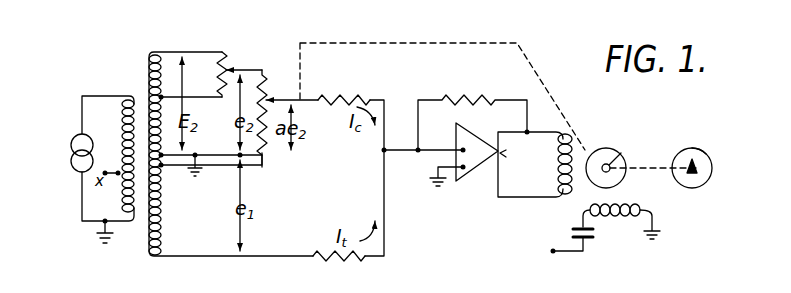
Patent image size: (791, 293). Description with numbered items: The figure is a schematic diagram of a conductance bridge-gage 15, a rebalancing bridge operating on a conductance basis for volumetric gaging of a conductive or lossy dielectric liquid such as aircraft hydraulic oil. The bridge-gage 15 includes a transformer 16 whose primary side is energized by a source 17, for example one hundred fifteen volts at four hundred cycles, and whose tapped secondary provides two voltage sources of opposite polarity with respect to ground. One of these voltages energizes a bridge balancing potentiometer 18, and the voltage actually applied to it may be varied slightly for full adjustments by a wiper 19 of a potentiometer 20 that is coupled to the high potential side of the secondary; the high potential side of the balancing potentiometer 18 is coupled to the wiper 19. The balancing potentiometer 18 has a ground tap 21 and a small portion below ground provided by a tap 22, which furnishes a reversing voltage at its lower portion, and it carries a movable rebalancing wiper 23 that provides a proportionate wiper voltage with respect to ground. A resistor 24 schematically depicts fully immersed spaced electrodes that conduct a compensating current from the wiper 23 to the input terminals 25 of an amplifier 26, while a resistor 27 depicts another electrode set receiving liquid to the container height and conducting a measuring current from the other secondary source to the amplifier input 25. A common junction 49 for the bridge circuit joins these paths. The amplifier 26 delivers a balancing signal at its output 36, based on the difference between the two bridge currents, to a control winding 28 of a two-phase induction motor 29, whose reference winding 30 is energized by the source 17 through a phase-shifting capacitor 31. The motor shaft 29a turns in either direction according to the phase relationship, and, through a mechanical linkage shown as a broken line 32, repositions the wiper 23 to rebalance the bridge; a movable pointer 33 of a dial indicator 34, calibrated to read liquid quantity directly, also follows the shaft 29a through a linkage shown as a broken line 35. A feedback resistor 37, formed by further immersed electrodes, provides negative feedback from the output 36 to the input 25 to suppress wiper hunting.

The conductance bridge-gage 15 is at (413, 29).
The transformer 16 is at (141, 214).
The source 17 is at (71, 162).
The bridge balancing potentiometer 18 is at (266, 78).
The wiper 19 is at (256, 70).
The potentiometer 20 is at (219, 63).
The ground tap 21 is at (265, 158).
The tap 22 is at (166, 172).
The movable rebalancing wiper 23 is at (272, 100).
The resistor 24 is at (352, 99).
The input terminals 25 is at (437, 158).
The amplifier 26 is at (476, 169).
The resistor 27 is at (354, 259).
The control winding 28 is at (560, 196).
The two-phase induction motor 29 is at (622, 142).
The motor shaft 29a is at (620, 156).
The reference winding 30 is at (633, 226).
The phase-shifting capacitor 31 is at (594, 240).
The broken line 32 is at (505, 42).
The movable pointer 33 is at (700, 170).
The dial indicator 34 is at (706, 154).
The broken line 35 is at (664, 172).
The amplifier output 36 is at (504, 153).
The feedback resistor 37 is at (487, 96).
The common junction 49 is at (381, 151).